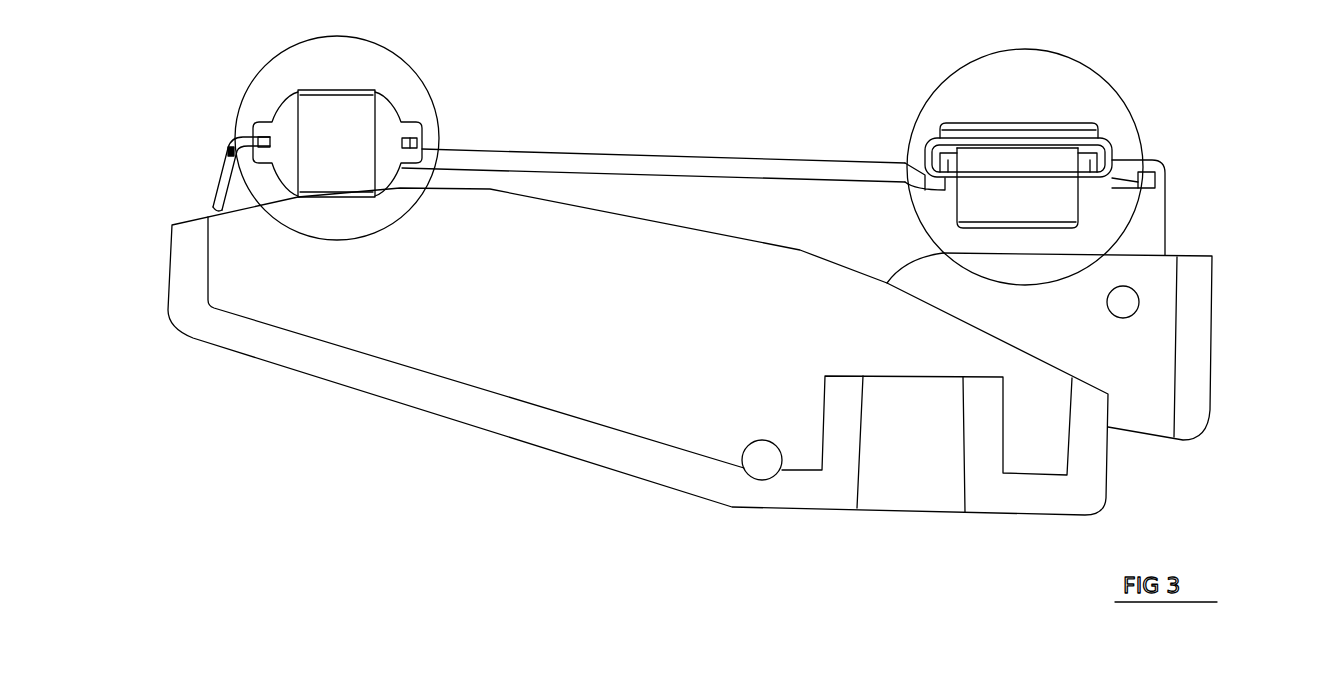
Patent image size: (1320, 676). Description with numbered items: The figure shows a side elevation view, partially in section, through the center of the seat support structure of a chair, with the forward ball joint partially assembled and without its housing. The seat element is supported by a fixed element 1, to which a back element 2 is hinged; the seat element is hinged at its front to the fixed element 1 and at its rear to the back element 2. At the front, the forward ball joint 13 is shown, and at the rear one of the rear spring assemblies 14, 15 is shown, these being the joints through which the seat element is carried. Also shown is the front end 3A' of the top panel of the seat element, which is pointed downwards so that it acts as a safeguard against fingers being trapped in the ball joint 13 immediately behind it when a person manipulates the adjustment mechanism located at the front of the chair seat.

The fixed element 1 is at (513, 357).
The back element 2 is at (1143, 337).
The forward ball joint 13 is at (427, 78).
The rear spring assembly 14 is at (1079, 152).
The rear spring assembly 15 is at (1018, 157).
The front end of the top panel 3A' is at (178, 174).